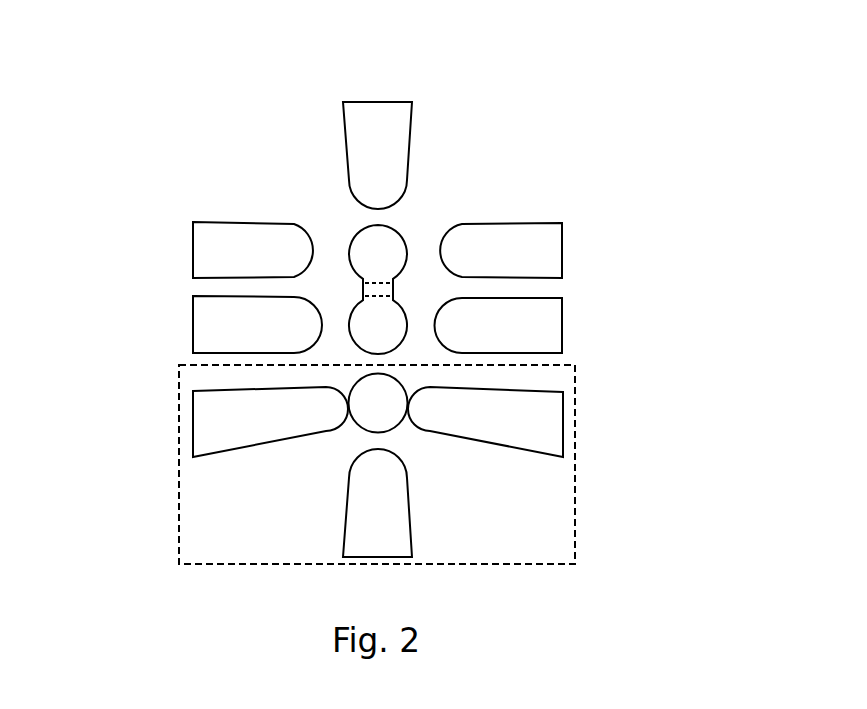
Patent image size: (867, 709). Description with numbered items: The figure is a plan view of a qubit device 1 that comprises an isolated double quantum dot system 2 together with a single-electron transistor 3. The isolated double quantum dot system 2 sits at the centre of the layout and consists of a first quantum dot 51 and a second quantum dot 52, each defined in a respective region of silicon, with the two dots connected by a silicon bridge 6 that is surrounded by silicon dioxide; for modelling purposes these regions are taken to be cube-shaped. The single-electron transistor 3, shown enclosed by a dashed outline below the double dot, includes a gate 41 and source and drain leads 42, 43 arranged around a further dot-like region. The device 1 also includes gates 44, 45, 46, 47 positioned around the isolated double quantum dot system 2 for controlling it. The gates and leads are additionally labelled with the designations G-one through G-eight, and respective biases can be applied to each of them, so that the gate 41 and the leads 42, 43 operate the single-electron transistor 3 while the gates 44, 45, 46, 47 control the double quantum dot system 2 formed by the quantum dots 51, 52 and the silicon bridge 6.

The qubit device 1 is at (181, 178).
The isolated double quantum dot system 2 is at (353, 233).
The single-electron transistor 3 is at (576, 525).
The gate 41 is at (332, 531).
The source lead 42 is at (197, 398).
The drain lead 43 is at (560, 411).
The gate 44 is at (196, 323).
The gate 45 is at (557, 326).
The gate 46 is at (196, 246).
The gate 47 is at (557, 250).
The first quantum dot 51 is at (393, 327).
The second quantum dot 52 is at (392, 242).
The silicon bridge 6 is at (390, 289).